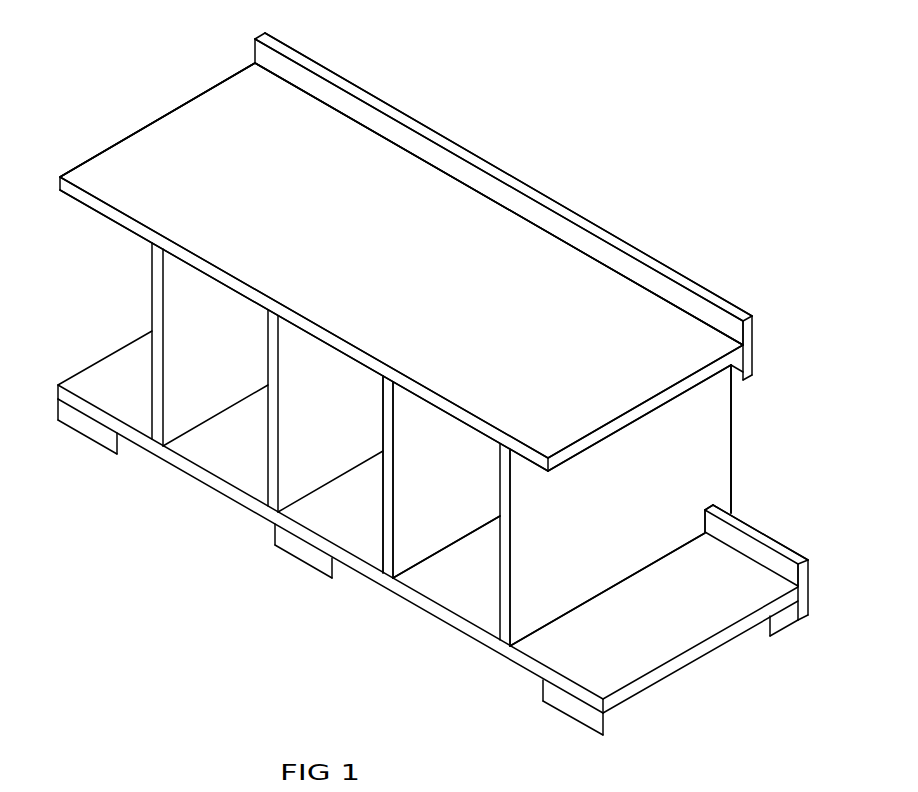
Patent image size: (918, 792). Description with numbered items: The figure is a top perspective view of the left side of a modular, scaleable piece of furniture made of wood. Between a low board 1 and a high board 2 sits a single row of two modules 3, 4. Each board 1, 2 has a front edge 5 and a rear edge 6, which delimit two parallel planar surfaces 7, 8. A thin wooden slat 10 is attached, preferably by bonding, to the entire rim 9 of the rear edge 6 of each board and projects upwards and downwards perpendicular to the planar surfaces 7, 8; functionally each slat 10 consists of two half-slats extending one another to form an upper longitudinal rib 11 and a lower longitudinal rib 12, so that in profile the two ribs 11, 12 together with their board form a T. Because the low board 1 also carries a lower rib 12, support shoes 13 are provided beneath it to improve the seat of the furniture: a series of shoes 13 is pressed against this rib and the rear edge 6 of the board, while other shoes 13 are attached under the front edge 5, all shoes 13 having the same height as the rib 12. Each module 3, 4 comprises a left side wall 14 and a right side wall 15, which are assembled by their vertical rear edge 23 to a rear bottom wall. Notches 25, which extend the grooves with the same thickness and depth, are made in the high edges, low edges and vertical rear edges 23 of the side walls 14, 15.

The low board 1 is at (107, 377).
The high board 2 is at (173, 140).
The module 3 is at (238, 456).
The module 4 is at (455, 585).
The front edge 5 is at (100, 193).
The rear edge 6 is at (264, 83).
The planar surface 7 is at (458, 224).
The planar surface 8 is at (83, 205).
The rim 9 is at (747, 351).
The slat 10 is at (385, 92).
The upper longitudinal rib 11 is at (643, 277).
The lower longitudinal rib 12 is at (748, 373).
The support shoe 13 is at (85, 421).
The left side wall 14 is at (533, 570).
The right side wall 15 is at (412, 508).
The vertical rear edge 23 is at (718, 398).
The notch 25 is at (706, 525).